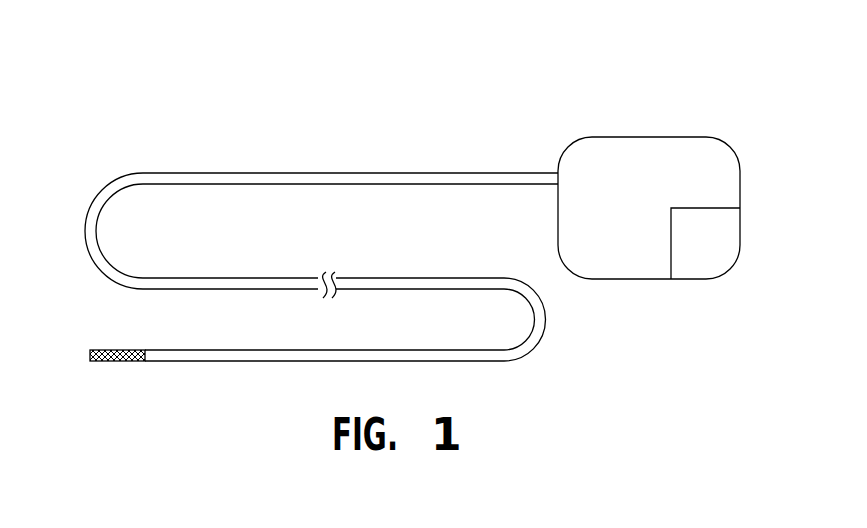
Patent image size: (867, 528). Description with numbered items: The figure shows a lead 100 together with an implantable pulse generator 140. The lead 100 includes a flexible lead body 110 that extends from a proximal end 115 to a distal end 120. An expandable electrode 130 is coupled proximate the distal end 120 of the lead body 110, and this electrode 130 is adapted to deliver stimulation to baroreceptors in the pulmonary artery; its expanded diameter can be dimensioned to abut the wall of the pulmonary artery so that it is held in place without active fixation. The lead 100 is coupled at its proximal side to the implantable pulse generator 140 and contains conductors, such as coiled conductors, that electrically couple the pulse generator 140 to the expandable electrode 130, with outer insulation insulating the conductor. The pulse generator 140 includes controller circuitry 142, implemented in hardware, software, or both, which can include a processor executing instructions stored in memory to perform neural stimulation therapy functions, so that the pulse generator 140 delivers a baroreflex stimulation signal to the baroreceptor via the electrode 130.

The lead 100 is at (118, 115).
The flexible lead body 110 is at (232, 278).
The proximal end 115 is at (530, 173).
The distal end 120 is at (143, 363).
The expandable electrode 130 is at (123, 348).
The implantable pulse generator 140 is at (649, 136).
The controller circuitry 142 is at (718, 259).